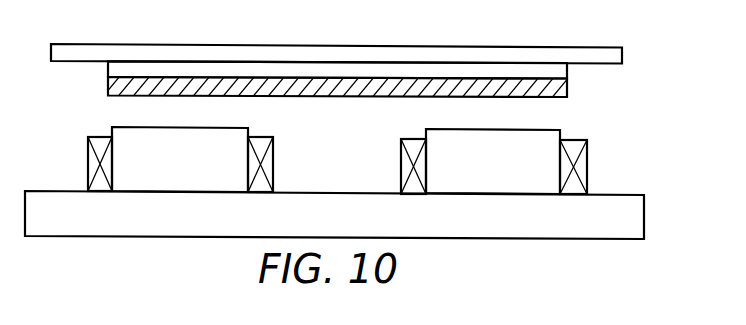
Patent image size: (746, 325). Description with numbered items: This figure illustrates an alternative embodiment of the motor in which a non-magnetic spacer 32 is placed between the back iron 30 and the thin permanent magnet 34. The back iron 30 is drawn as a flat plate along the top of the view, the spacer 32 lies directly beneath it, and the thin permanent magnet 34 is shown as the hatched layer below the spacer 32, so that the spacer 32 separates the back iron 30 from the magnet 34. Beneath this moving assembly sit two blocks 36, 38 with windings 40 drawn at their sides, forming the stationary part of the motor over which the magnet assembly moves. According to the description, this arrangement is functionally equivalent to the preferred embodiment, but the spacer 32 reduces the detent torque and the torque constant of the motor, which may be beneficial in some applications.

The back iron 30 is at (77, 52).
The non-magnetic spacer 32 is at (110, 70).
The thin permanent magnet 34 is at (113, 93).
The first core 36 is at (193, 176).
The second core 38 is at (507, 181).
The coil 40 is at (92, 162).